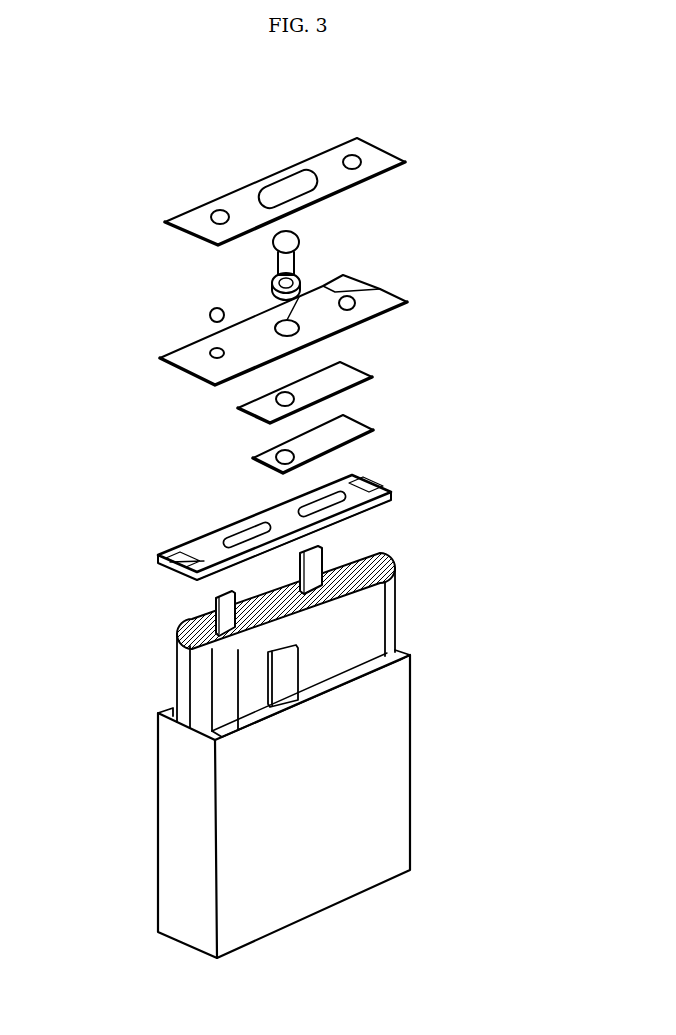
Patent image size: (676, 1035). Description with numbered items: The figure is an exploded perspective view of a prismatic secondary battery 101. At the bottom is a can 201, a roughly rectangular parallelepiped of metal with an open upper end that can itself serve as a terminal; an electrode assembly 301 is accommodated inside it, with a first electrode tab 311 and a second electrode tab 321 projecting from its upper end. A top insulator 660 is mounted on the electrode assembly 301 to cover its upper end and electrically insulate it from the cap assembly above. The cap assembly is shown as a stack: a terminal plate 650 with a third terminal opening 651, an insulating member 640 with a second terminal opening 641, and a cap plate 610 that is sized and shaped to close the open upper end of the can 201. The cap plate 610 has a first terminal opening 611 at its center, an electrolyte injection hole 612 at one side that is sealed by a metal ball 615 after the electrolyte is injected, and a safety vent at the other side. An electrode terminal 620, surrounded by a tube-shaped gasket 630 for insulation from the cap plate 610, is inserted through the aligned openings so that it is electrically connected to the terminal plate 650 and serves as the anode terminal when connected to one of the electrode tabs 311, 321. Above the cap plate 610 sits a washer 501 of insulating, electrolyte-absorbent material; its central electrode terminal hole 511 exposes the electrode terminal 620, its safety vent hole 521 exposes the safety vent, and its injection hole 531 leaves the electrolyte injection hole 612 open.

The secondary battery 101 is at (77, 131).
The can 201 is at (387, 802).
The electrode assembly 301 is at (362, 635).
The first electrode tab 311 is at (216, 603).
The second electrode tab 321 is at (320, 550).
The washer 501 is at (407, 161).
The electrode terminal hole 511 is at (285, 192).
The safety vent hole 521 is at (352, 158).
The injection hole 531 is at (218, 214).
The cap plate 610 is at (407, 301).
The first terminal opening 611 is at (352, 298).
The electrolyte injection hole 612 is at (167, 363).
The metal ball 615 is at (210, 314).
The electrode terminal 620 is at (299, 234).
The gasket 630 is at (272, 282).
The insulating member 640 is at (373, 376).
The second terminal opening 641 is at (276, 393).
The terminal plate 650 is at (375, 430).
The third terminal opening 651 is at (277, 452).
The top insulator 660 is at (200, 542).